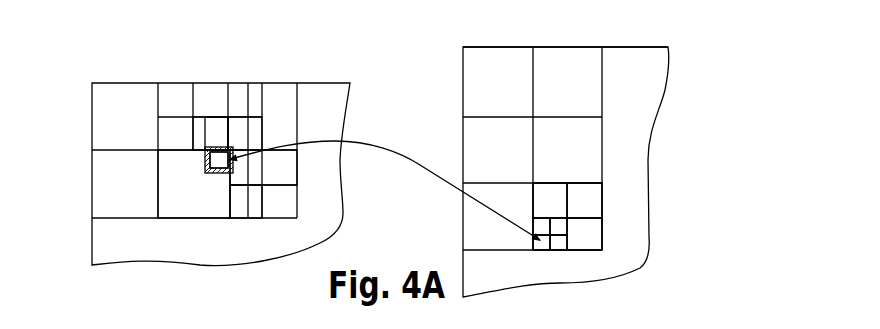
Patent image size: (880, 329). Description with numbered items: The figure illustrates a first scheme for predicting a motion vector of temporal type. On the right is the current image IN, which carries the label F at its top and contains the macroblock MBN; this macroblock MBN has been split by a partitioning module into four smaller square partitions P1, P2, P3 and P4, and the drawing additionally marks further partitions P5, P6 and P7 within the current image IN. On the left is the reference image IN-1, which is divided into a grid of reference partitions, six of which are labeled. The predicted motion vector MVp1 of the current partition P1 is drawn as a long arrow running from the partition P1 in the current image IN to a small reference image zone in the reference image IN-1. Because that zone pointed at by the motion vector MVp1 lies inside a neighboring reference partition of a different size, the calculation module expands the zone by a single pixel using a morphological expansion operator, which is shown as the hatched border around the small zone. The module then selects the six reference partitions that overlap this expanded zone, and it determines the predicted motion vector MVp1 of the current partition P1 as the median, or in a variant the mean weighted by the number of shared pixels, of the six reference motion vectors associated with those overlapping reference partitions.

The reference image IN-1 is at (322, 84).
The current image IN is at (627, 75).
The frame F is at (565, 23).
The predicted motion vector MVp1 is at (383, 148).
The macroblock MBN is at (599, 257).
The current partition P1 is at (537, 248).
The partition P2 is at (540, 222).
The partition P3 is at (560, 227).
The partition P4 is at (555, 248).
The partition P5 is at (548, 192).
The partition P6 is at (585, 192).
The partition P7 is at (582, 248).